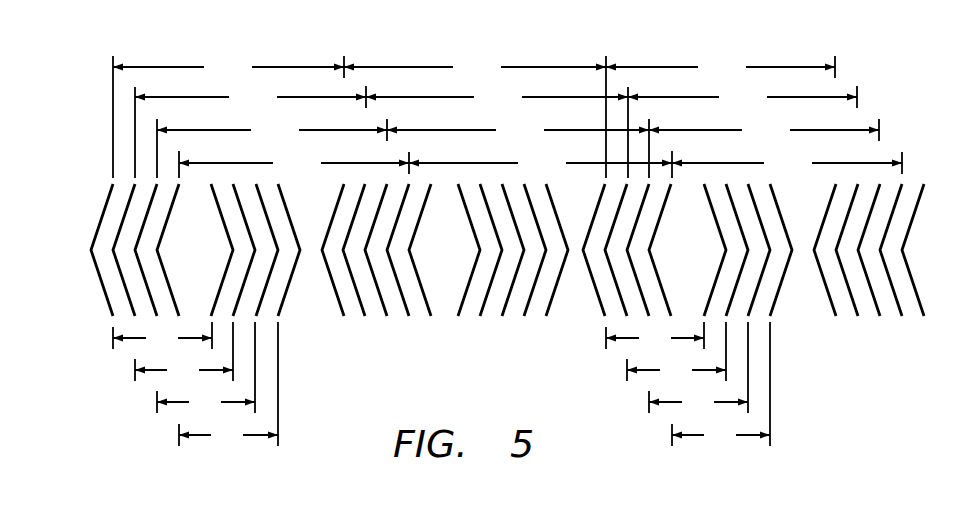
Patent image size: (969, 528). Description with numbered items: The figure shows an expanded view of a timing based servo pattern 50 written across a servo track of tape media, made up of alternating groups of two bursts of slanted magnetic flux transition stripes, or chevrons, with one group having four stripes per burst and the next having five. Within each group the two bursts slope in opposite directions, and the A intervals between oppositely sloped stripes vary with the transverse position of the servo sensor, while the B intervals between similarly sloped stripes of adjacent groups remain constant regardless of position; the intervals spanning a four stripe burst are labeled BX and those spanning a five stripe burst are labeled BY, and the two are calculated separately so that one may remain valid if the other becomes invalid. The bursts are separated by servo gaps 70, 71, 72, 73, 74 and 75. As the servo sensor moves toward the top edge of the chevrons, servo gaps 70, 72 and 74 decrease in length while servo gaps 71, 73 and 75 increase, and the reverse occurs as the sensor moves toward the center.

The servo pattern 50 is at (93, 213).
The servo gap 70 is at (181, 264).
The servo gap 71 is at (297, 211).
The servo gap 72 is at (433, 264).
The servo gap 73 is at (562, 211).
The servo gap 74 is at (674, 264).
The servo gap 75 is at (790, 211).